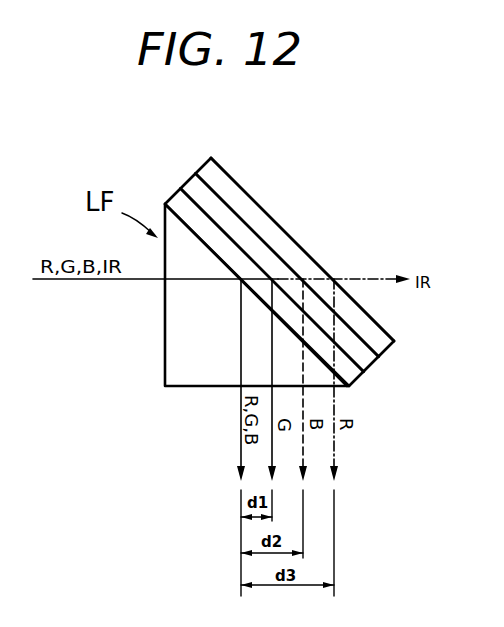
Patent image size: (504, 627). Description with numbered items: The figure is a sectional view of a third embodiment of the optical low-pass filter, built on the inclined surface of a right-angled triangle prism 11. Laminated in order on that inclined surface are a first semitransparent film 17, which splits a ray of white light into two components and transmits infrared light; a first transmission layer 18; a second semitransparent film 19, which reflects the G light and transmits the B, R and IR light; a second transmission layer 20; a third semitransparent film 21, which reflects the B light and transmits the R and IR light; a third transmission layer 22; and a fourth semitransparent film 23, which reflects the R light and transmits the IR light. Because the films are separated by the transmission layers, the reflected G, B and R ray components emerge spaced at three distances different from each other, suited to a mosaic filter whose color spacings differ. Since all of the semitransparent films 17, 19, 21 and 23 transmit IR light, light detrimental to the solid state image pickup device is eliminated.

The right-angled triangle prism 11 is at (185, 386).
The first semitransparent film 17 is at (207, 215).
The second semitransparent film 19 is at (236, 244).
The third semitransparent film 21 is at (283, 261).
The first transmission layer 18 is at (363, 375).
The second transmission layer 20 is at (376, 362).
The third transmission layer 22 is at (391, 344).
The fourth semitransparent film 23 is at (376, 320).